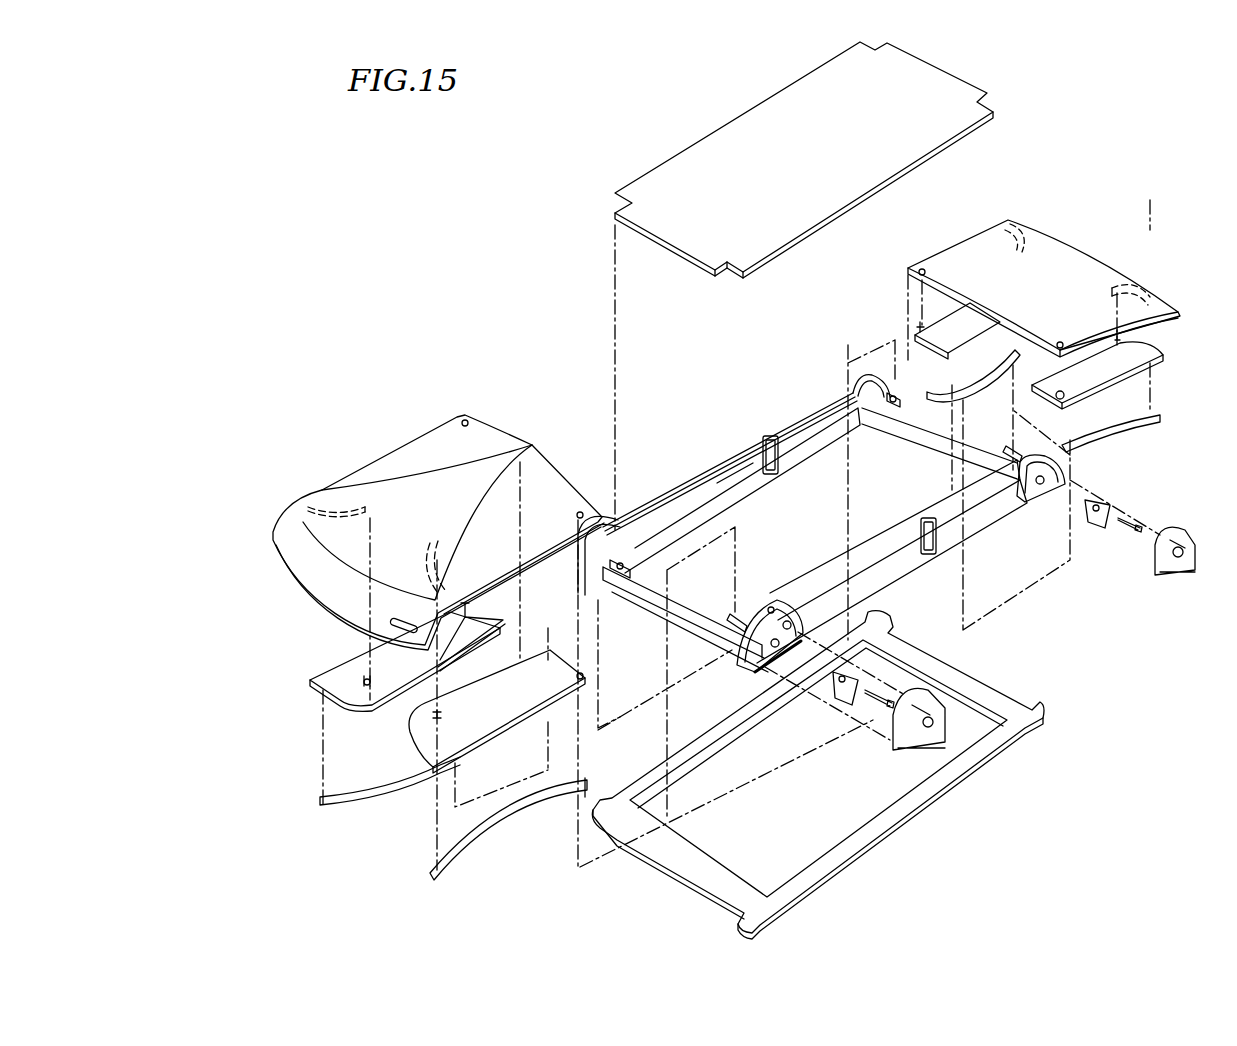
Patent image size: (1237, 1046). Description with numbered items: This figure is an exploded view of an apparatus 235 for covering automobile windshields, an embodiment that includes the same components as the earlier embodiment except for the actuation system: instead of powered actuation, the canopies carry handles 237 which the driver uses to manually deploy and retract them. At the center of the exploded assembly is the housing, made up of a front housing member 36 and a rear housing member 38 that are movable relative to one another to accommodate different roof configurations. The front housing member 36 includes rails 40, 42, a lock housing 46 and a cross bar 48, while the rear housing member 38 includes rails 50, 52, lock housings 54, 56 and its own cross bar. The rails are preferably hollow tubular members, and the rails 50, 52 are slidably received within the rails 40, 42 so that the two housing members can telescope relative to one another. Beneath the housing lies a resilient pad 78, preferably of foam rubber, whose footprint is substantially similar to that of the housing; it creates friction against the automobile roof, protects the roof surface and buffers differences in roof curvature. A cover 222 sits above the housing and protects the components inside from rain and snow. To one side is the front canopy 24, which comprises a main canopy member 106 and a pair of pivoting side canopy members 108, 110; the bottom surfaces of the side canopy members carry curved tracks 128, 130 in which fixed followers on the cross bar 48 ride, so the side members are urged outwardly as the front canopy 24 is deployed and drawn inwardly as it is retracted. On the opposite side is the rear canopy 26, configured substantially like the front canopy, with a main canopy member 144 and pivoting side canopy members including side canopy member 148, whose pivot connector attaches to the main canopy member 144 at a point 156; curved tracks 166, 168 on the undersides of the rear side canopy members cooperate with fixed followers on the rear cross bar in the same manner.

The front canopy 24 is at (411, 637).
The rear canopy 26 is at (1017, 315).
The front housing member 36 is at (658, 616).
The rear housing member 38 is at (917, 458).
The rail 40 is at (838, 522).
The rail 42 is at (725, 495).
The lock housing 46 is at (578, 565).
The cross bar 48 is at (745, 668).
The rail 50 is at (970, 517).
The rail 52 is at (790, 460).
The lock housing 54 is at (1068, 470).
The lock housing 56 is at (858, 378).
The resilient pad 78 is at (1000, 737).
The main canopy member 106 is at (315, 585).
The side canopy member 108 is at (420, 738).
The side canopy member 110 is at (337, 670).
The curved track 128 is at (452, 870).
The curved track 130 is at (333, 806).
The main canopy member 144 is at (1110, 268).
The side canopy member 148 is at (905, 355).
The point 156 is at (1162, 355).
The curved track 166 is at (1160, 418).
The curved track 168 is at (975, 395).
The cover 222 is at (990, 113).
The apparatus 235 is at (578, 212).
The handle 237 is at (400, 652).